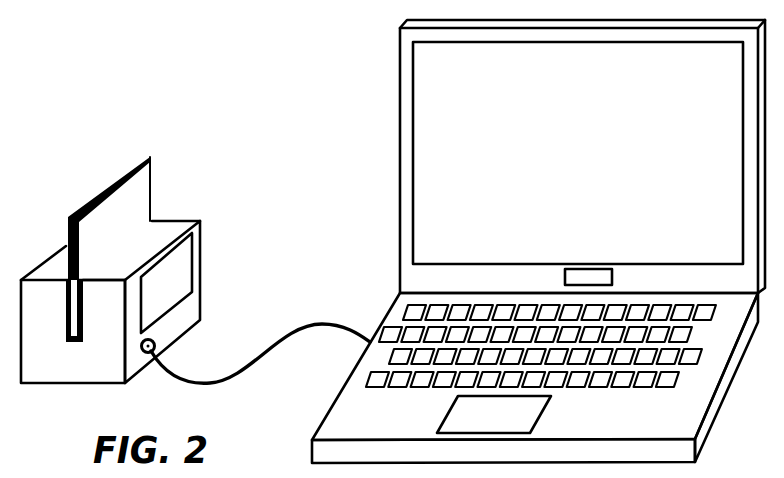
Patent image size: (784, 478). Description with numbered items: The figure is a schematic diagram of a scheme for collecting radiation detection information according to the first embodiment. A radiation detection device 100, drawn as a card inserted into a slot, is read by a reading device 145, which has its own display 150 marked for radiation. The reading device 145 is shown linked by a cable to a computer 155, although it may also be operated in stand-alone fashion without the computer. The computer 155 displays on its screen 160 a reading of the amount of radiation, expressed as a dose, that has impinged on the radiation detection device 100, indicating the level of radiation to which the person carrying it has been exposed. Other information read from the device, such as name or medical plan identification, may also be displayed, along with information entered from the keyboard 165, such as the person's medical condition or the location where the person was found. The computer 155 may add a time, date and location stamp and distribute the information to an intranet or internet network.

The radiation detection device 100 is at (136, 232).
The reading device 145 is at (91, 371).
The display 150 is at (192, 257).
The computer 155 is at (608, 427).
The screen 160 is at (681, 221).
The keyboard 165 is at (435, 337).